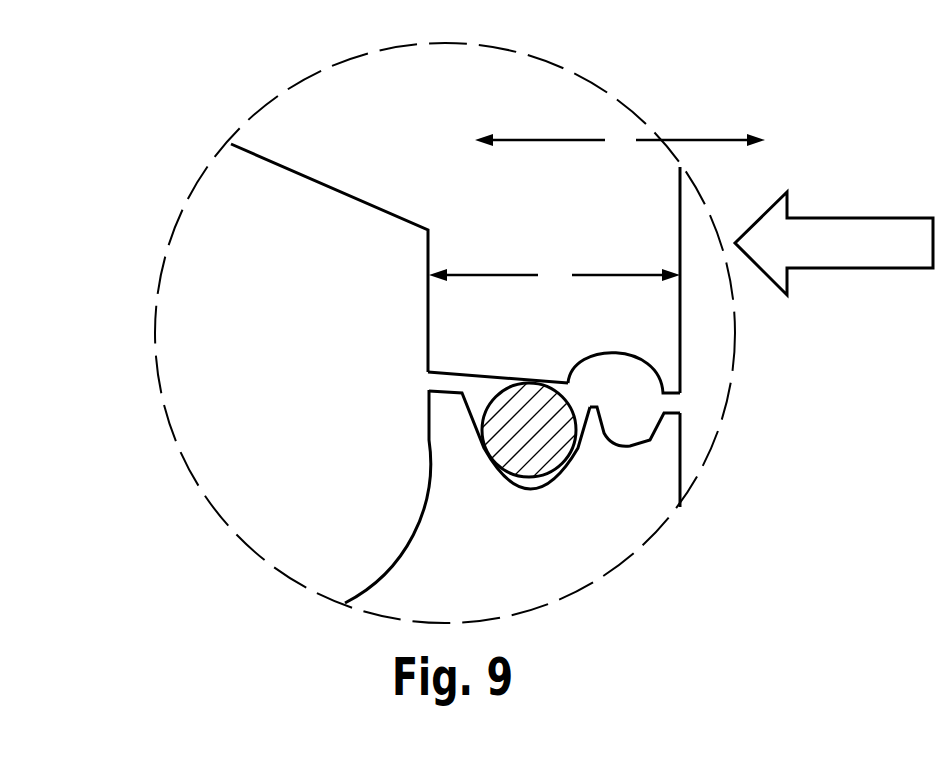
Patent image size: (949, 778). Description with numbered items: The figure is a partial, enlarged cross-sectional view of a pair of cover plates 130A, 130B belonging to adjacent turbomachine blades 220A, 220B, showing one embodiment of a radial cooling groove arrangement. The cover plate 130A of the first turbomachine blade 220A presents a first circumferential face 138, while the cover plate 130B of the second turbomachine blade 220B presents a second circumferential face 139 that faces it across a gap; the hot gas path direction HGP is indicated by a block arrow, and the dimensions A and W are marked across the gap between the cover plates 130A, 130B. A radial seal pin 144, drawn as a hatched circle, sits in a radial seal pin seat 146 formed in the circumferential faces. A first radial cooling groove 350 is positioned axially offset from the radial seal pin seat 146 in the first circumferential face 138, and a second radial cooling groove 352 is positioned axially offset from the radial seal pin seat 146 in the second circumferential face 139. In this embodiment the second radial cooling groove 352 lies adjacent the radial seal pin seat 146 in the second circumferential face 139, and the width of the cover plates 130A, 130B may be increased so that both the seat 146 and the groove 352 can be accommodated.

The turbomachine blade 220A is at (518, 214).
The cover plate 130A is at (428, 190).
The first circumferential face 138 is at (462, 372).
The turbomachine blade 220B is at (520, 519).
The cover plate 130B is at (428, 538).
The radial seal pin 144 is at (523, 446).
The radial seal pin seat 146 is at (527, 490).
The second circumferential face 139 is at (673, 402).
The first radial cooling groove 350 is at (640, 373).
The second radial cooling groove 352 is at (632, 428).
The dimension A is at (620, 141).
The slot width W is at (554, 274).
The hot gas path flow HGP is at (872, 243).